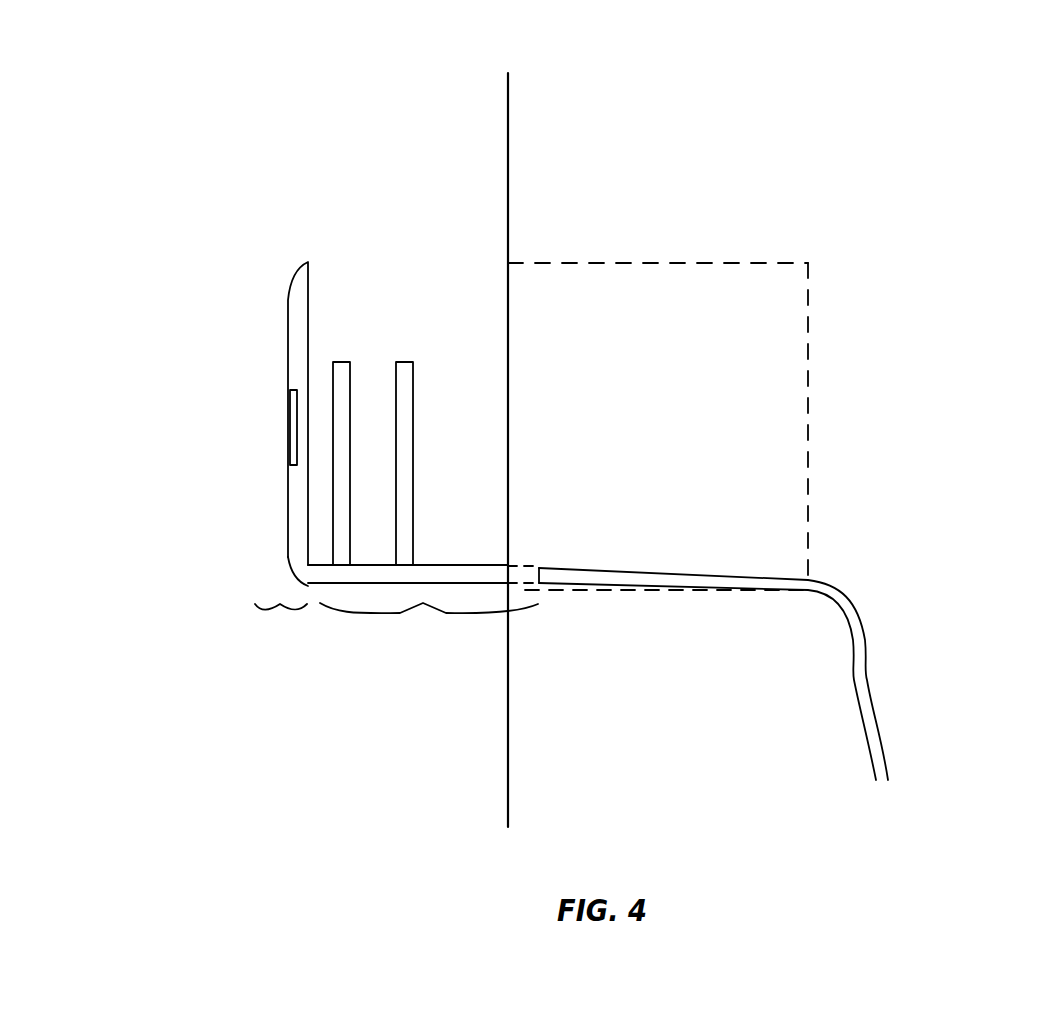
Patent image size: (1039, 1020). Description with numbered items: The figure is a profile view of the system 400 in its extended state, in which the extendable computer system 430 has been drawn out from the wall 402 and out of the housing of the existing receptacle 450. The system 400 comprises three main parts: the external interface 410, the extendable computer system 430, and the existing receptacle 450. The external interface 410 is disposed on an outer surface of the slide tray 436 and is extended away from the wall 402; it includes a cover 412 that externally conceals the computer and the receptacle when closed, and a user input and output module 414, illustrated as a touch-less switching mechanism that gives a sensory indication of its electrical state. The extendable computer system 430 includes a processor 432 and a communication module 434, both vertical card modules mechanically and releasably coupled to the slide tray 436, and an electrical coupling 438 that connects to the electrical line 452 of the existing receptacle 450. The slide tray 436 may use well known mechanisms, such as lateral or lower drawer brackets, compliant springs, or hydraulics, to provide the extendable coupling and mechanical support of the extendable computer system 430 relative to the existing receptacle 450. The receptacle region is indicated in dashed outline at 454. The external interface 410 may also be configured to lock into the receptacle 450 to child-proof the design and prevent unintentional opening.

The system 400 is at (317, 76).
The wall 402 is at (508, 177).
The external interface 410 is at (281, 624).
The cover 412 is at (298, 298).
The user input and output module 414 is at (288, 431).
The extendable computer system 430 is at (429, 623).
The processor 432 is at (348, 360).
The communication module 434 is at (410, 360).
The slide tray 436 is at (440, 565).
The electrical coupling 438 is at (545, 568).
The existing receptacle 450 is at (947, 326).
The electrical line 452 is at (862, 623).
The dashed outline of region 454 is at (762, 263).